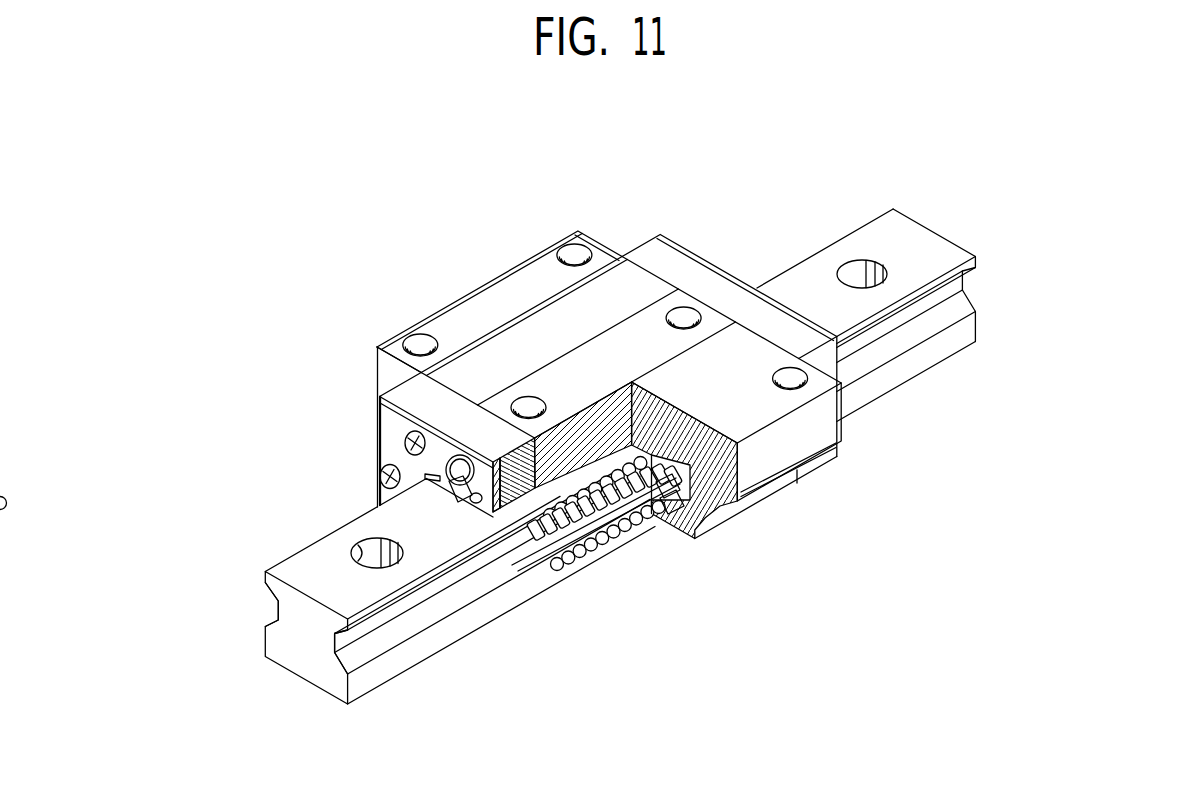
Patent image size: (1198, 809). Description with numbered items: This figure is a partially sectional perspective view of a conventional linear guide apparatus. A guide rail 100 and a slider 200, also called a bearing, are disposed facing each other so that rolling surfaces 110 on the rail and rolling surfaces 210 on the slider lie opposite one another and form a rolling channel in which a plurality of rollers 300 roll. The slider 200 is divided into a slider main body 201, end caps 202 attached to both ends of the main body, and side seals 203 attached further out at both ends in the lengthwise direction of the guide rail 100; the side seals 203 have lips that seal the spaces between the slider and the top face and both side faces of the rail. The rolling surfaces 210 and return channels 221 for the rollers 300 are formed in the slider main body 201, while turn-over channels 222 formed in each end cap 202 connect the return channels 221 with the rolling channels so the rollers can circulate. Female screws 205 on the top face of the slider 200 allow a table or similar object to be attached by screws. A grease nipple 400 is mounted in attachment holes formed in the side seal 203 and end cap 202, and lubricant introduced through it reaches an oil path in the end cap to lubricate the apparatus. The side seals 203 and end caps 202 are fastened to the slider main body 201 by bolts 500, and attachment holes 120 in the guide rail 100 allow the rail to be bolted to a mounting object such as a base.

The guide rail 100 is at (434, 638).
The rolling surfaces 110 is at (262, 586).
The attachment holes 120 is at (360, 545).
The slider 200 is at (420, 425).
The slider main body 201 is at (455, 305).
The end caps 202 is at (683, 272).
The side seals 203 is at (718, 278).
The female screws 205 is at (570, 246).
The rolling surfaces 210 is at (632, 537).
The return channels 221 is at (670, 500).
The turn-over channels 222 is at (516, 569).
The rollers 300 is at (599, 567).
The grease nipple 400 is at (463, 490).
The bolts 500 is at (405, 441).